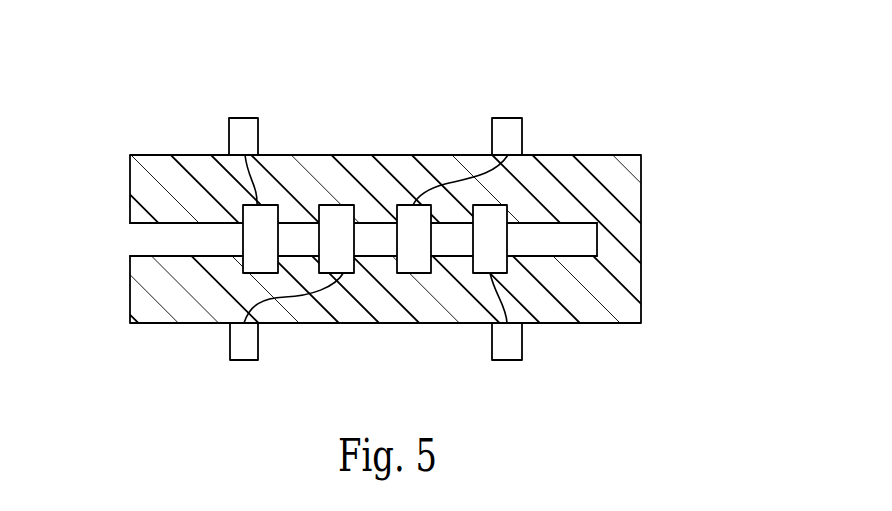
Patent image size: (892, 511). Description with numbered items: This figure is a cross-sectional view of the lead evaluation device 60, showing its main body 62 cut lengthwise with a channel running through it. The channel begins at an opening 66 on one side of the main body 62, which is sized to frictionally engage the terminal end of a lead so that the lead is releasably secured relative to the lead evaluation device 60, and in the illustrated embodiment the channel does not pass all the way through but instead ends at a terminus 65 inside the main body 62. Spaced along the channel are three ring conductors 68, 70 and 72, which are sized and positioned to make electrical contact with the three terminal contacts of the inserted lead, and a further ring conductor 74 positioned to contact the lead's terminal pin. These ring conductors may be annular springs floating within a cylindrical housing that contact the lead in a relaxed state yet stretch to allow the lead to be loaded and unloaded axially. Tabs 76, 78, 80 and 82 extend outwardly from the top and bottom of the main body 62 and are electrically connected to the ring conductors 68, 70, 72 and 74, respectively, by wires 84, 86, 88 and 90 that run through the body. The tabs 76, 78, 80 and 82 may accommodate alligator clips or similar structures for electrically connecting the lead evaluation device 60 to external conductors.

The lead evaluation device 60 is at (390, 207).
The main body 62 is at (390, 218).
The terminus 65 is at (598, 238).
The opening 66 is at (136, 238).
The ring conductor 68 is at (244, 244).
The ring conductor 70 is at (344, 272).
The ring conductor 72 is at (416, 268).
The ring conductor 74 is at (500, 212).
The tab 76 is at (232, 132).
The tab 78 is at (232, 345).
The tab 80 is at (498, 128).
The tab 82 is at (515, 345).
The wire 84 is at (254, 185).
The wire 86 is at (285, 298).
The wire 88 is at (413, 203).
The wire 90 is at (497, 296).